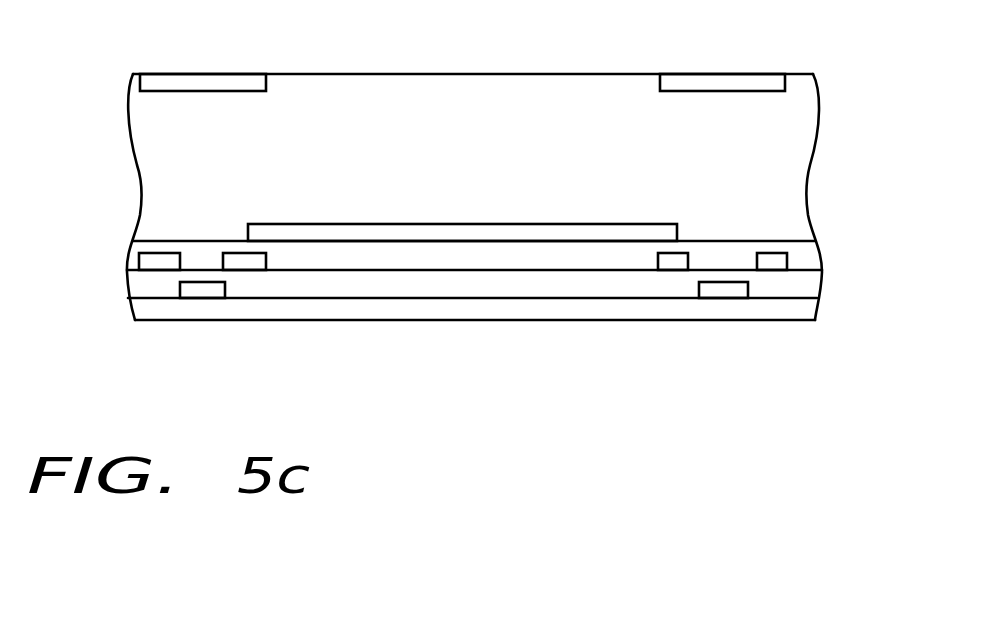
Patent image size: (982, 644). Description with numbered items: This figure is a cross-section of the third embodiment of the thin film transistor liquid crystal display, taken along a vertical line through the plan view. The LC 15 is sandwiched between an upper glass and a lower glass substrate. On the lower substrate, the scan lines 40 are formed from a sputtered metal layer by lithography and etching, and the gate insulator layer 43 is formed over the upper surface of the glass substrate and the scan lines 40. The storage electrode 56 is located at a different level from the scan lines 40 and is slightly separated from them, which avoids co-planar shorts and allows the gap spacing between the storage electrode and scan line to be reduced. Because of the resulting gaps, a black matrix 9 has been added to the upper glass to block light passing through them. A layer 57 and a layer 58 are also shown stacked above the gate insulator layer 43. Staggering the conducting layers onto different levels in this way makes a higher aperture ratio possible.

The black matrix 9 is at (186, 82).
The LC 15 is at (461, 102).
The storage electrode 56 is at (241, 258).
The scan lines 40 is at (203, 293).
The insulating layer 57 is at (373, 258).
The pixel electrode 58 is at (480, 229).
The gate insulator layer 43 is at (575, 286).